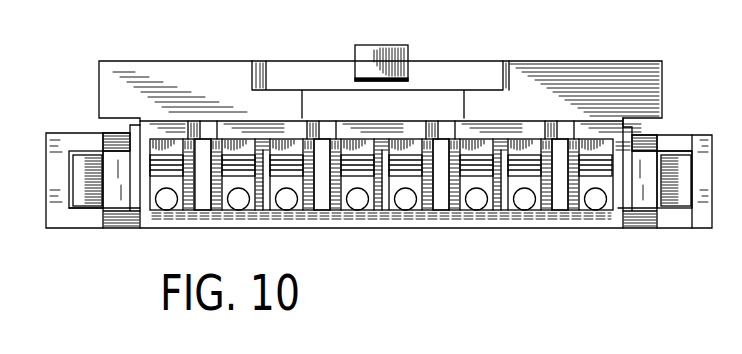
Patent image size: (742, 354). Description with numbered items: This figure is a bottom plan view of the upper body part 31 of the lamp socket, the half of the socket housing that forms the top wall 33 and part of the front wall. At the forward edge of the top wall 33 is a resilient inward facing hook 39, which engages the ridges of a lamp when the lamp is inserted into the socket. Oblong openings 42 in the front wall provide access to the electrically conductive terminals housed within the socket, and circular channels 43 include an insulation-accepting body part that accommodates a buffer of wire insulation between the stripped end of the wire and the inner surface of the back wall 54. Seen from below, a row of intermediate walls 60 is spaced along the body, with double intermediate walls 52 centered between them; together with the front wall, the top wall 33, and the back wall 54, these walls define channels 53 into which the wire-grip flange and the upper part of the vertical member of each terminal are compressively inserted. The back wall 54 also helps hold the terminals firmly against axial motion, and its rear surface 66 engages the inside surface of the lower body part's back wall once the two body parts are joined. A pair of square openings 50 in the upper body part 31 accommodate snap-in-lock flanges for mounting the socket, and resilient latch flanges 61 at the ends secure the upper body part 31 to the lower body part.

The upper body part 31 is at (136, 237).
The top wall 33 is at (577, 77).
The resilient inward facing hook 39 is at (367, 58).
The oblong openings 42 is at (207, 122).
The circular channels 43 is at (358, 206).
The square openings 50 is at (74, 186).
The double intermediate walls 52 is at (457, 199).
The channels 53 is at (518, 168).
The back wall 54 is at (557, 217).
The intermediate walls 60 is at (140, 196).
The resilient latch flanges 61 is at (87, 170).
The rear surface 66 is at (601, 238).